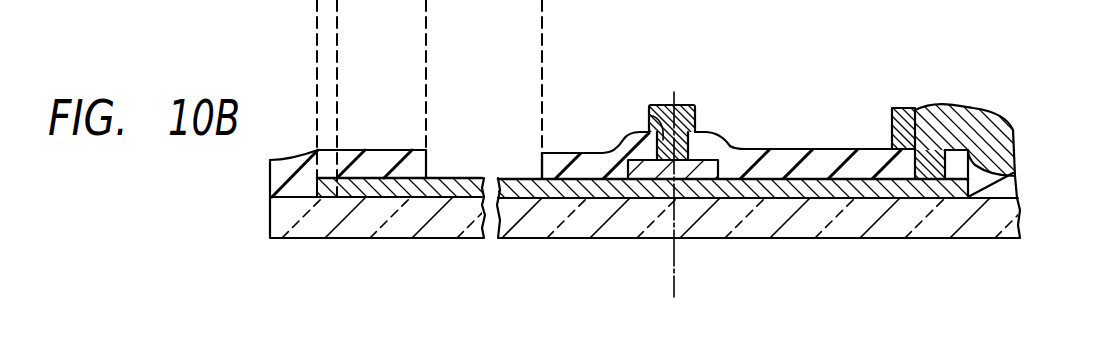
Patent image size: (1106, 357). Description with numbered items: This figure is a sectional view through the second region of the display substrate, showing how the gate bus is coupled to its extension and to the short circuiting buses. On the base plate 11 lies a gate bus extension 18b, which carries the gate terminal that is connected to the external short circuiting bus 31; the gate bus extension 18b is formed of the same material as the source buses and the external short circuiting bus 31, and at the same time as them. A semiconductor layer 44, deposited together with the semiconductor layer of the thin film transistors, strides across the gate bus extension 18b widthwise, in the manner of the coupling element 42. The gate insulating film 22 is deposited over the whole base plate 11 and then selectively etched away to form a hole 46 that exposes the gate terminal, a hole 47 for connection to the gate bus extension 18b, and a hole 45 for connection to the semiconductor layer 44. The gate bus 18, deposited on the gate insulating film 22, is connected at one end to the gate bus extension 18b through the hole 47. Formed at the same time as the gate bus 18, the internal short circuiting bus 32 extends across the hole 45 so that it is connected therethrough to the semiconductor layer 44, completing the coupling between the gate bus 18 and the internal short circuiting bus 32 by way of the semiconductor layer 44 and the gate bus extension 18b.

The base plate 11 is at (530, 240).
The gate bus 18 is at (997, 128).
The gate bus extension 18b is at (788, 187).
The gate insulating film 22 is at (386, 158).
The external short circuiting bus 31 is at (322, 190).
The internal short circuiting bus 32 is at (692, 105).
The coupling element 42 is at (708, 117).
The semiconductor layer 44 is at (708, 160).
The hole 45 is at (658, 120).
The hole 46 is at (542, 165).
The hole 47 is at (915, 110).